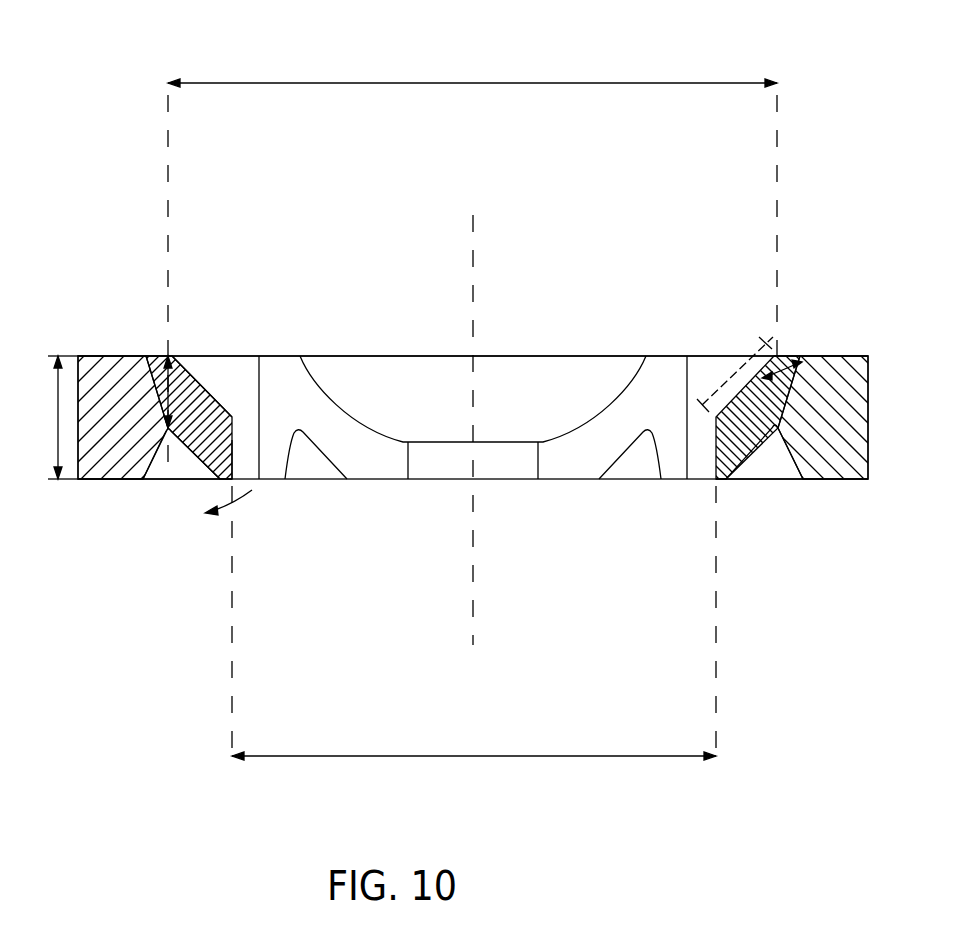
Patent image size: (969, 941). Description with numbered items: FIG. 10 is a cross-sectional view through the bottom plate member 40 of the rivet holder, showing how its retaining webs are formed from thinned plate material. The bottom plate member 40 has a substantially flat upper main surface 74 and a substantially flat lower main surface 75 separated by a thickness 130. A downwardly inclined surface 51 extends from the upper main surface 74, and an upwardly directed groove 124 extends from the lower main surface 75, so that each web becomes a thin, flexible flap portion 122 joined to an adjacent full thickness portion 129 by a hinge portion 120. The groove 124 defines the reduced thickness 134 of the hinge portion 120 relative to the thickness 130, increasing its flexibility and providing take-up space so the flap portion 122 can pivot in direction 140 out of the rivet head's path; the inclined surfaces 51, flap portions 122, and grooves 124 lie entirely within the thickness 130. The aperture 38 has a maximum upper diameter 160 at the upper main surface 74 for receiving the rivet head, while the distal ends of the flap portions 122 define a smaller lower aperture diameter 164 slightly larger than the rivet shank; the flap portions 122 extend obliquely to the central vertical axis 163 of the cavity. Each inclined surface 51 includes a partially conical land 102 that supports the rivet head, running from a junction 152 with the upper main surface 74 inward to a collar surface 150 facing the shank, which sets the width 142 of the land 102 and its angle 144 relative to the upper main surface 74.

The aperture 38 is at (585, 370).
The bottom plate member 40 is at (845, 480).
The downwardly inclined surface 51 is at (243, 388).
The upper main surface 74 is at (848, 356).
The lower main surface 75 is at (131, 479).
The land 102 is at (223, 357).
The hinge portion 120 is at (187, 357).
The flap portion 122 is at (233, 461).
The groove 124 is at (167, 462).
The full thickness portion 129 is at (112, 462).
The thickness 130 is at (38, 356).
The reduced thickness 134 is at (170, 396).
The direction 140 is at (236, 500).
The width 142 is at (736, 366).
The angle 144 is at (801, 390).
The collar surface 150 is at (713, 447).
The junction 152 is at (786, 341).
The maximum upper diameter 160 is at (688, 83).
The central vertical axis 163 is at (473, 257).
The lower aperture diameter 164 is at (603, 757).